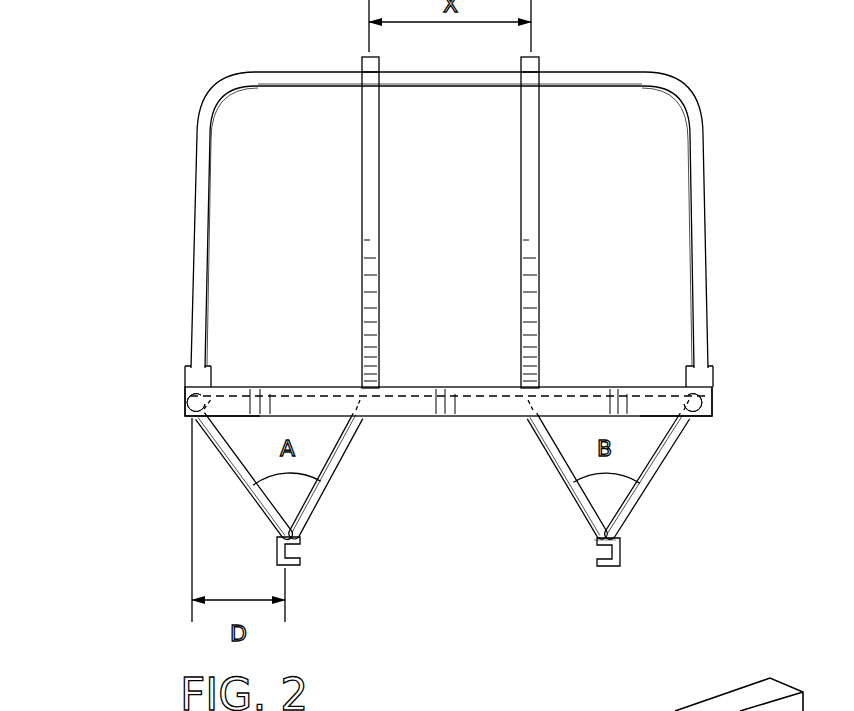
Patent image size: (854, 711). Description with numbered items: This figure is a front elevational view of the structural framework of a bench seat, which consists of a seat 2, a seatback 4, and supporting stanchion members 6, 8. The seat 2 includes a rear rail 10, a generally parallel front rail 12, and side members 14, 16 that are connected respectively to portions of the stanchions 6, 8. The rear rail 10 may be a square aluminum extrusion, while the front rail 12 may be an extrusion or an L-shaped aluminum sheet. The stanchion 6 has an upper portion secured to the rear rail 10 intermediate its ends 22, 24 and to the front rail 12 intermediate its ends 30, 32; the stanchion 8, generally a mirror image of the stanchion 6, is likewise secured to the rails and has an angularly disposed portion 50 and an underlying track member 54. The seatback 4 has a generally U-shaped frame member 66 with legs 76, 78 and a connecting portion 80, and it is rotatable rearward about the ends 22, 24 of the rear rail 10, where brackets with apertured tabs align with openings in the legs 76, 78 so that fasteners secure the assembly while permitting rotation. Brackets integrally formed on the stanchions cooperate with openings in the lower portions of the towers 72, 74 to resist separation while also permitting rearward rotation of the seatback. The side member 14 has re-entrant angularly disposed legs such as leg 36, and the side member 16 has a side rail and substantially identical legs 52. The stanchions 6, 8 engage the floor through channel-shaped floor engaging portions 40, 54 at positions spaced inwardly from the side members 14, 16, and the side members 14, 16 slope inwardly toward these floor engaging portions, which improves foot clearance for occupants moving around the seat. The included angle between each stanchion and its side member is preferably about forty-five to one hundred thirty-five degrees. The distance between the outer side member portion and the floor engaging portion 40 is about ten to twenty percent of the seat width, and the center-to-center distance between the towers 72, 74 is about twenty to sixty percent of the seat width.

The seat 2 is at (452, 190).
The seatback 4 is at (195, 131).
The stanchion member 6 is at (355, 461).
The stanchion member 8 is at (578, 512).
The rear rail 10 is at (653, 694).
The front rail 12 is at (457, 420).
The side member 14 is at (182, 401).
The side member 16 is at (735, 391).
The end of rear rail 22 is at (191, 368).
The end of rear rail 24 is at (715, 380).
The end of front rail 30 is at (185, 410).
The end of front rail 32 is at (712, 414).
The leg 36 is at (240, 462).
The floor engaging portion 40 is at (305, 562).
The angularly disposed portion 50 is at (560, 478).
The leg 52 is at (665, 452).
The track member 54 is at (624, 552).
The U-shaped seatback frame member 66 is at (692, 108).
The tower 72 is at (360, 208).
The tower 74 is at (545, 202).
The leg of seatback frame 76 is at (197, 205).
The leg of seatback frame 78 is at (702, 150).
The connecting portion 80 is at (300, 72).